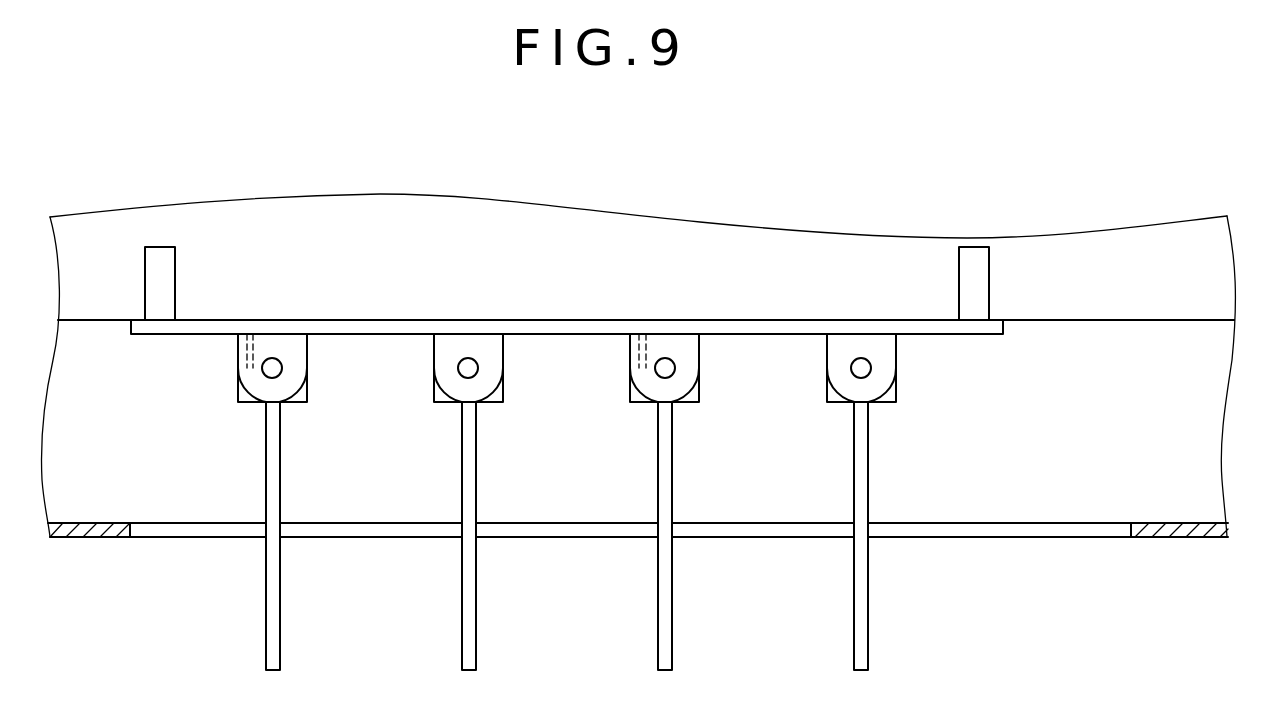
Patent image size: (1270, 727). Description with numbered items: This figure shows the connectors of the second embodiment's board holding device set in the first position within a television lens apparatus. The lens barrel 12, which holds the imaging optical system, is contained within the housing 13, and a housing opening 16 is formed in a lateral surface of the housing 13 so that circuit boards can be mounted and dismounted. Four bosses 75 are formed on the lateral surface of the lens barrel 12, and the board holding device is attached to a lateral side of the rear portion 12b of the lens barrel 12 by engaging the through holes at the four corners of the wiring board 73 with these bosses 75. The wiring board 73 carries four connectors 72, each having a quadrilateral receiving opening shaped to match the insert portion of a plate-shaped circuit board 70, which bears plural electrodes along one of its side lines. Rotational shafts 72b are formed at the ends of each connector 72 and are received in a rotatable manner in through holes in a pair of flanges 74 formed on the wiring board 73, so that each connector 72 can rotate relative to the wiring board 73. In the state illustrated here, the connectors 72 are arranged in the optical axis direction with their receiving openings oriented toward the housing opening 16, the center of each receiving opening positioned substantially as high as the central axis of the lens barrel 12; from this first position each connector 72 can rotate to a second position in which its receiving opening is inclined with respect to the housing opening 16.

The lens barrel 12 is at (663, 257).
The rear portion 12b is at (1140, 322).
The housing 13 is at (1165, 528).
The housing opening 16 is at (1062, 528).
The circuit board 70 is at (863, 635).
The connector 72 is at (887, 398).
The rotational shaft 72b is at (851, 368).
The wiring board 73 is at (173, 337).
The flange 74 is at (887, 350).
The boss 75 is at (158, 288).